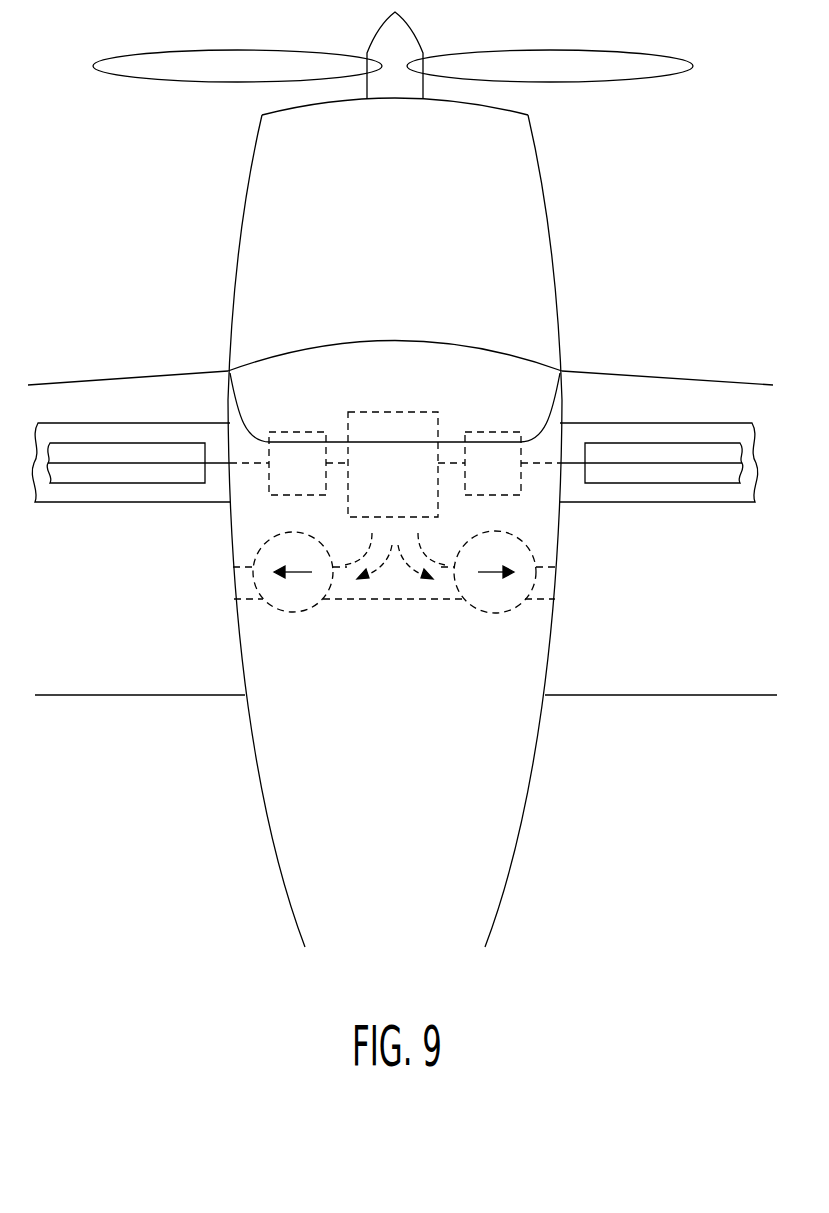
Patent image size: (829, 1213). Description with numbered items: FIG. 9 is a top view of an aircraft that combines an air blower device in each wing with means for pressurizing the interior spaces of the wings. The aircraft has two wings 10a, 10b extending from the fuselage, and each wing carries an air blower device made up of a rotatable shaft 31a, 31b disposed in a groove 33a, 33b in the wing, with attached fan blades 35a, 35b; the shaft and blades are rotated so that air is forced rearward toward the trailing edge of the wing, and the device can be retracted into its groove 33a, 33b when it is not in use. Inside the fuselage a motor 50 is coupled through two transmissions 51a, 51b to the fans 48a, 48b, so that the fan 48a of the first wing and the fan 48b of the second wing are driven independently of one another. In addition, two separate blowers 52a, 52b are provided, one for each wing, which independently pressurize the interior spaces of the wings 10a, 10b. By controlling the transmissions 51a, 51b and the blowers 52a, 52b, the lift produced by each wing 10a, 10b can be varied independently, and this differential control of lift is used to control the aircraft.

The wing 10a is at (85, 650).
The wing 10b is at (678, 650).
The rotatable shaft 31a is at (220, 467).
The rotatable shaft 31b is at (572, 467).
The groove 33a is at (144, 423).
The groove 33b is at (645, 423).
The fan blades 35a is at (116, 473).
The fan blades 35b is at (695, 473).
The fan 48a is at (94, 423).
The fan 48b is at (695, 423).
The motor 50 is at (398, 412).
The transmission 51a is at (297, 432).
The transmission 51b is at (490, 432).
The blower 52a is at (295, 613).
The blower 52b is at (495, 613).